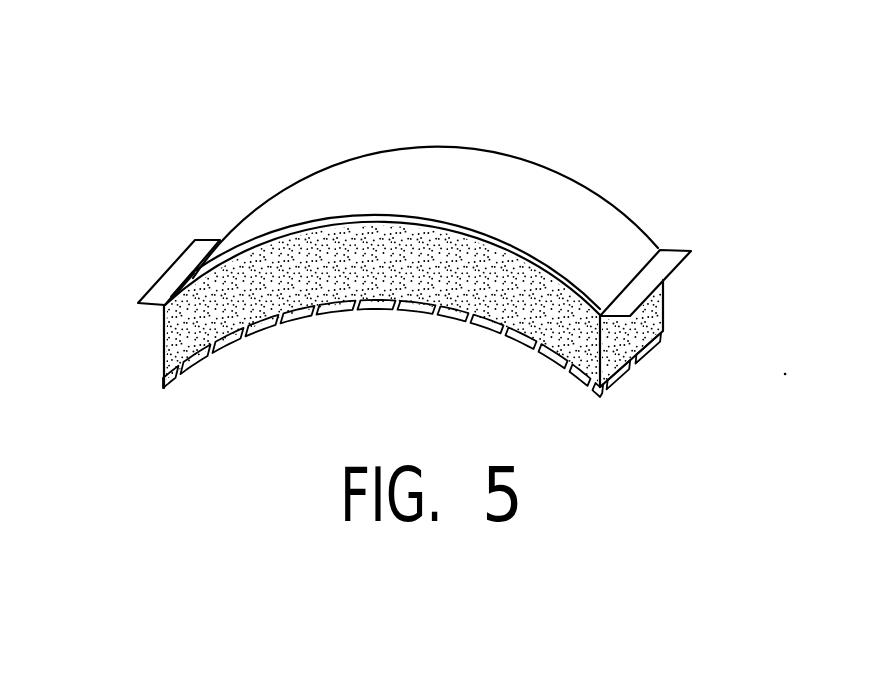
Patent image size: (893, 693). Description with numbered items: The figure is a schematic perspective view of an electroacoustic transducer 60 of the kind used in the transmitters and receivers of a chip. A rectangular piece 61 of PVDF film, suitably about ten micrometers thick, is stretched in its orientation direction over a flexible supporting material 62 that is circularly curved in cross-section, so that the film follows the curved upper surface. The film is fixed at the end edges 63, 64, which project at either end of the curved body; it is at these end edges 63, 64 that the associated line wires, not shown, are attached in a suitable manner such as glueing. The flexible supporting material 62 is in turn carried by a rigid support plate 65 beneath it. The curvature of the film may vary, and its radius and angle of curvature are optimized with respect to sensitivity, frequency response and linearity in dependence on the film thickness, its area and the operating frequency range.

The transducer 60 is at (431, 228).
The rectangular piece of PVDF film 61 is at (563, 197).
The flexible supporting material 62 is at (508, 297).
The end edge 63 is at (164, 287).
The end edge 64 is at (667, 262).
The rigid support plate 65 is at (312, 317).